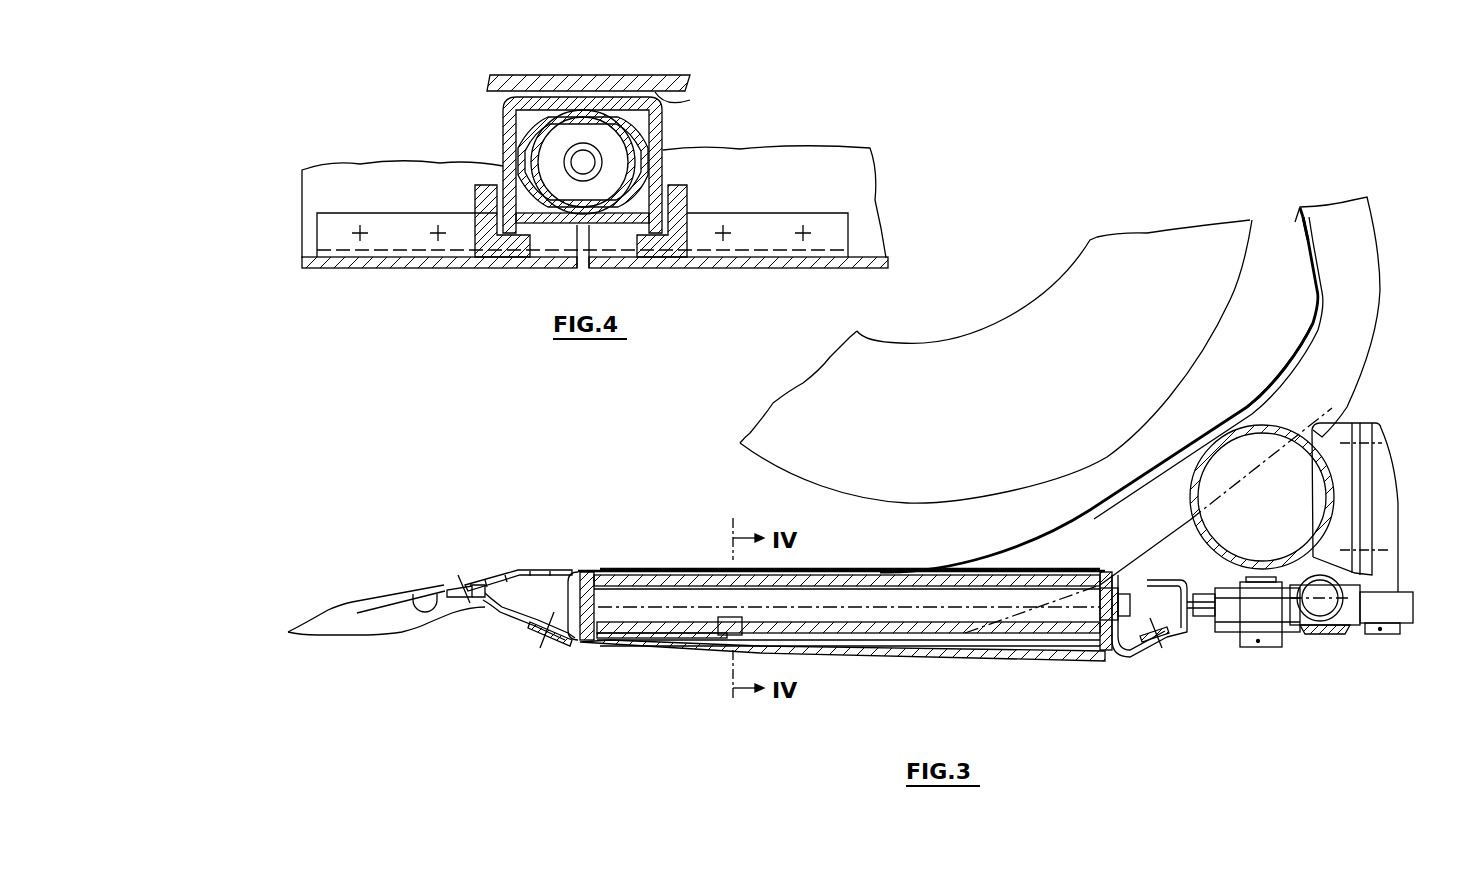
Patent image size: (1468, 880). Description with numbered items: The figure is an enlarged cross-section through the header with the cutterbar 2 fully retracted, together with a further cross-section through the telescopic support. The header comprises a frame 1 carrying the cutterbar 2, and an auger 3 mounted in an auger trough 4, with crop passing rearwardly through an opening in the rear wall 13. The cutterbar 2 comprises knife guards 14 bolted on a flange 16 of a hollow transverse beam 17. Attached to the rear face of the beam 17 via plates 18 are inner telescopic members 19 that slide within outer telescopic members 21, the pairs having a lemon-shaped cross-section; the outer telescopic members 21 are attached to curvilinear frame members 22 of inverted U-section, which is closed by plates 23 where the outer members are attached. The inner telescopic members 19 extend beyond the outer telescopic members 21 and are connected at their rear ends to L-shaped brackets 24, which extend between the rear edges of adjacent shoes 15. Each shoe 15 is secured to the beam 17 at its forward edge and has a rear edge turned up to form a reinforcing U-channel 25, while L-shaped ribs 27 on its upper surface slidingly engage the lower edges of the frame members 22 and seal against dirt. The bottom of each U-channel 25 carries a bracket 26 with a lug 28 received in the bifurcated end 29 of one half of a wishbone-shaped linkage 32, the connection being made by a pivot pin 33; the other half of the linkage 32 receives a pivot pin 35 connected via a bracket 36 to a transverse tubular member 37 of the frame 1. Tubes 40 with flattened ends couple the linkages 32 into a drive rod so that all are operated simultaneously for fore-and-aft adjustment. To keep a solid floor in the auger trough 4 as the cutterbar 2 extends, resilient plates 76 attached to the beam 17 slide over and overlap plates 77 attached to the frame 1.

In FIG. 3, the frame 1 is at (1372, 392).
In FIG. 3, the cutterbar 2 is at (431, 636).
In FIG. 3, the auger 3 is at (1252, 232).
In FIG. 3, the auger trough 4 is at (1278, 376).
In FIG. 3, the rear wall 13 is at (1303, 246).
In FIG. 3, the knife guards 14 is at (380, 635).
In FIG. 4, the shoes 15 is at (728, 268).
In FIG. 3, the shoes 15 is at (918, 658).
In FIG. 3, the flange 16 is at (458, 583).
In FIG. 3, the hollow transverse beam 17 is at (518, 568).
In FIG. 3, the plates 18 is at (548, 622).
In FIG. 4, the inner telescopic members 19 is at (660, 170).
In FIG. 3, the inner telescopic members 19 is at (1070, 632).
In FIG. 4, the outer telescopic members 21 is at (655, 130).
In FIG. 3, the outer telescopic members 21 is at (740, 606).
In FIG. 4, the curvilinear frame members 22 is at (503, 132).
In FIG. 3, the curvilinear frame members 22 is at (1160, 482).
In FIG. 4, the plates 23 is at (553, 225).
In FIG. 3, the plates 23 is at (690, 640).
In FIG. 4, the L-shaped brackets 24 is at (353, 215).
In FIG. 3, the L-shaped brackets 24 is at (1125, 655).
In FIG. 4, the U-channels 25 is at (790, 158).
In FIG. 3, the U-channels 25 is at (1180, 580).
In FIG. 3, the bracket 26 is at (1200, 622).
In FIG. 4, the L-shaped ribs 27 is at (475, 190).
In FIG. 3, the L-shaped ribs 27 is at (930, 612).
In FIG. 3, the lug 28 is at (1225, 632).
In FIG. 3, the bifurcated end 29 is at (1292, 628).
In FIG. 3, the wishbone-shaped linkage 32 is at (1323, 664).
In FIG. 3, the pivot pin 33 is at (1263, 647).
In FIG. 3, the pivot pin 35 is at (1405, 630).
In FIG. 3, the bracket 36 is at (1392, 505).
In FIG. 3, the transverse tubular member 37 is at (1218, 432).
In FIG. 3, the tubes 40 is at (1340, 616).
In FIG. 4, the plates 76 is at (487, 84).
In FIG. 3, the plates 76 is at (655, 572).
In FIG. 4, the plates 77 is at (700, 108).
In FIG. 3, the plates 77 is at (945, 568).